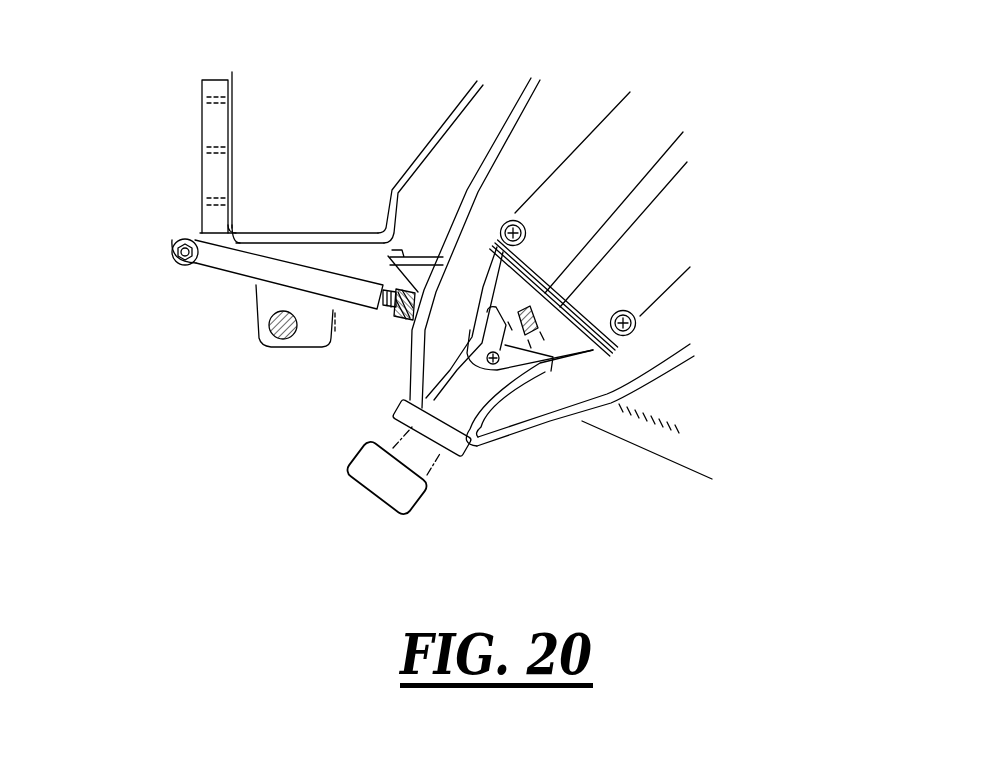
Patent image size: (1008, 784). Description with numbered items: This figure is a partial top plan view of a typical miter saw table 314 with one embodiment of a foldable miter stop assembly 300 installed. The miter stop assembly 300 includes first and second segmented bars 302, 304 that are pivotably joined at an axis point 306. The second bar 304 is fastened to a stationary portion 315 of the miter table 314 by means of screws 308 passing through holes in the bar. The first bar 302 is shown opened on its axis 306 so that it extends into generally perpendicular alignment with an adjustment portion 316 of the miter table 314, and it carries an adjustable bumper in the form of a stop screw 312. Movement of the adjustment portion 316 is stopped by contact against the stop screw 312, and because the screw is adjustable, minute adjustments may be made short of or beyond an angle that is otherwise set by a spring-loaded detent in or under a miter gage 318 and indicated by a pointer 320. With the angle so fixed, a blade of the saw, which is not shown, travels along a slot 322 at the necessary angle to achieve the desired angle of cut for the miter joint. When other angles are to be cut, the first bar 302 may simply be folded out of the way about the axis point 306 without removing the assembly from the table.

The miter stop assembly 300 is at (150, 96).
The first segmented bar 302 is at (272, 276).
The second segmented bar 304 is at (199, 127).
The axis point 306 is at (172, 271).
The screws 308 is at (233, 203).
The stop screw 312 is at (387, 326).
The miter saw table 314 is at (333, 114).
The stationary portion 315 is at (231, 72).
The adjustment portion 316 is at (555, 118).
The miter gage 318 is at (645, 430).
The pointer 320 is at (541, 322).
The slot 322 is at (634, 212).